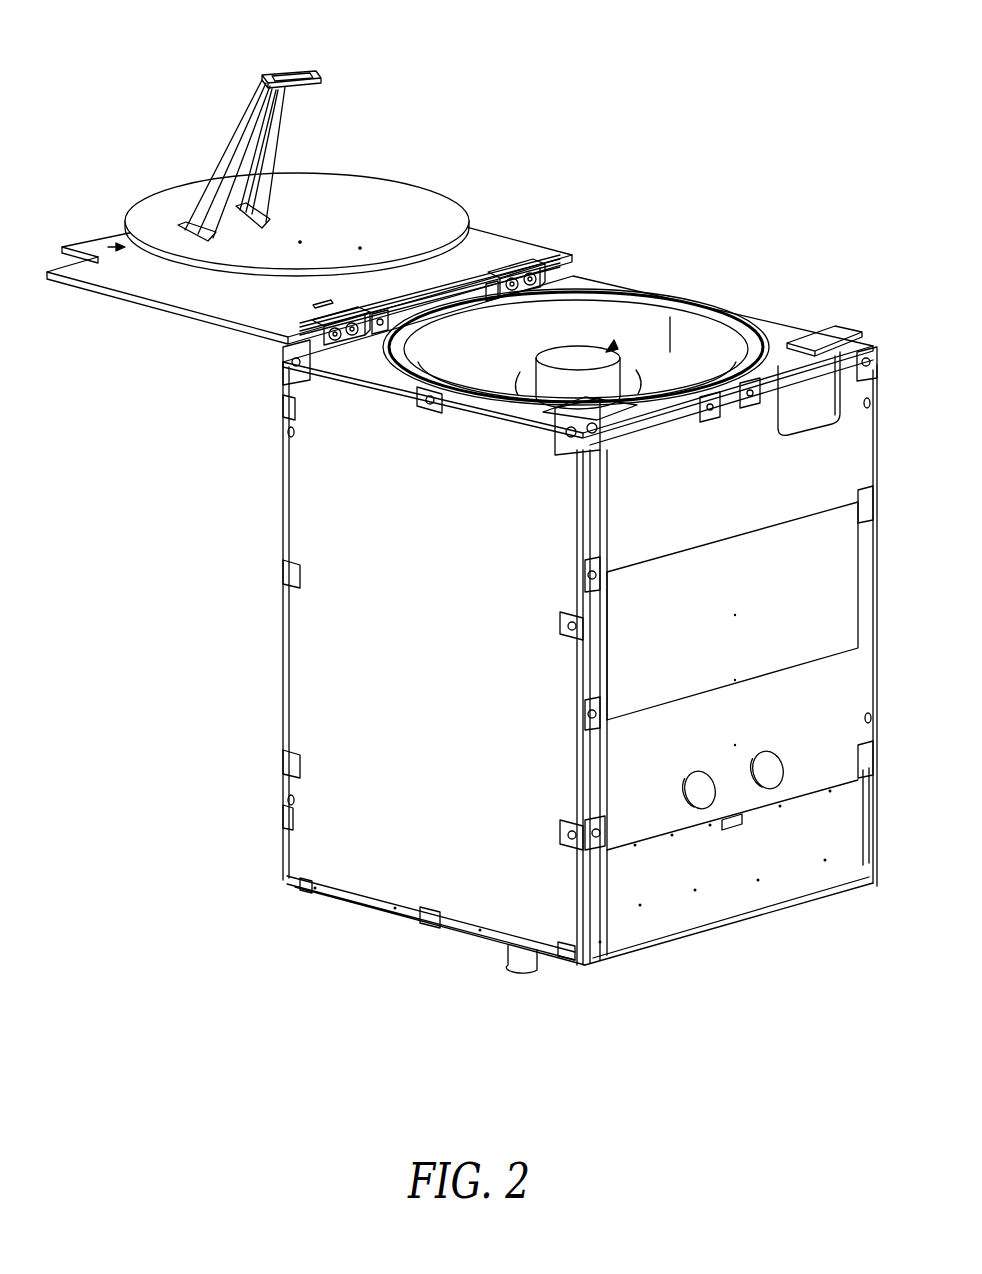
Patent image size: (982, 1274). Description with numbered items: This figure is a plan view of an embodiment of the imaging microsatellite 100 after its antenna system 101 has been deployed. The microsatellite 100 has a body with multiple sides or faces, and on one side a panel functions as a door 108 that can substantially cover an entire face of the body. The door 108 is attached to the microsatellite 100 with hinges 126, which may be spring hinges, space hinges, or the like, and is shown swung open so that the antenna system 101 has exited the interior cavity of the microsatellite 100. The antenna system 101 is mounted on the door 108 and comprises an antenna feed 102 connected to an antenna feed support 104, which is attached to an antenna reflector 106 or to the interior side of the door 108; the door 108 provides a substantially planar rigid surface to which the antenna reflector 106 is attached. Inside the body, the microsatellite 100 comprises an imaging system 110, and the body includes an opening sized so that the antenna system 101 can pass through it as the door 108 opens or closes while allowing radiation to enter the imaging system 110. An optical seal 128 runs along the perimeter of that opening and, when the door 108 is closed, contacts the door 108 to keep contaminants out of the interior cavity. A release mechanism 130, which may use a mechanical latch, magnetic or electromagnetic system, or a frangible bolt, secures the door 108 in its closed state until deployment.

The imaging microsatellite 100 is at (580, 515).
The antenna system 101 is at (110, 247).
The antenna feed 102 is at (294, 72).
The antenna feed support 104 is at (195, 202).
The antenna reflector 106 is at (422, 212).
The door 108 is at (238, 302).
The imaging system 110 is at (612, 345).
The hinges 126 is at (514, 270).
The optical seal 128 is at (594, 320).
The release mechanism 130 is at (775, 330).